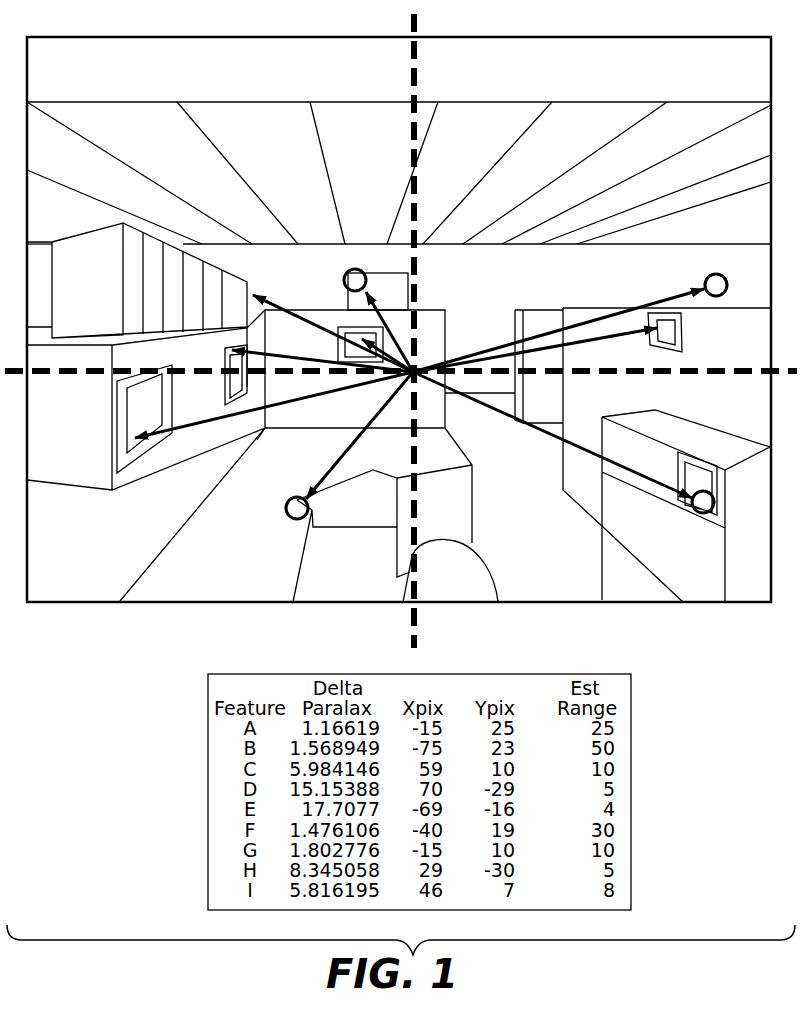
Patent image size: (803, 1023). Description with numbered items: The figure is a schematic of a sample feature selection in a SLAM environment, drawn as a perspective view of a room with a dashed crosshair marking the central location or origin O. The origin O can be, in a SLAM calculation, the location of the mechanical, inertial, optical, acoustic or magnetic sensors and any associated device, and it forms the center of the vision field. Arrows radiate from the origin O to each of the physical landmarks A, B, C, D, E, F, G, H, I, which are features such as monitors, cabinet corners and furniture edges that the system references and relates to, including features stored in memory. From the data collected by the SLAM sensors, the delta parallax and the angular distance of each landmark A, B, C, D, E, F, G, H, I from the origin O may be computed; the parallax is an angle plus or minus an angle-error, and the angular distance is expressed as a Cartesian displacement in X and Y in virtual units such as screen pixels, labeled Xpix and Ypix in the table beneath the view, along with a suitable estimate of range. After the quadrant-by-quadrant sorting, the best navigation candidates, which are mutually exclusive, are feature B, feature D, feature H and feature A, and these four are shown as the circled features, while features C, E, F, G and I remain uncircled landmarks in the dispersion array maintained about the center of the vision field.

The origin O is at (416, 368).
The physical landmark A is at (388, 332).
The physical landmark B is at (506, 343).
The physical landmark C is at (610, 340).
The physical landmark D is at (550, 430).
The physical landmark E is at (297, 402).
The physical landmark F is at (321, 327).
The physical landmark G is at (365, 331).
The physical landmark H is at (338, 453).
The physical landmark I is at (268, 356).